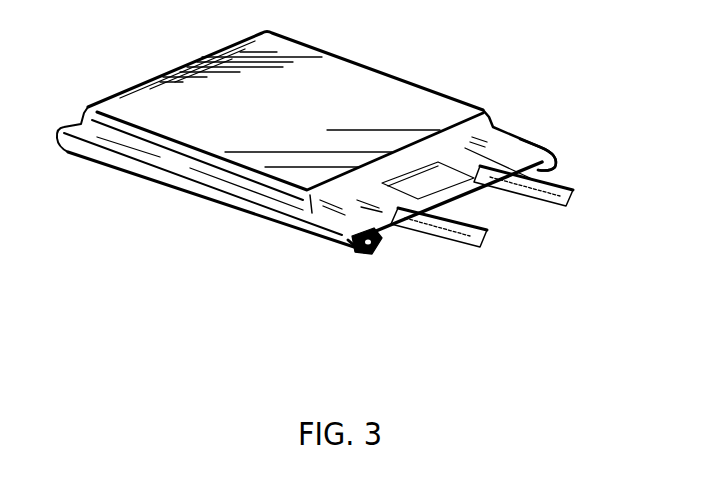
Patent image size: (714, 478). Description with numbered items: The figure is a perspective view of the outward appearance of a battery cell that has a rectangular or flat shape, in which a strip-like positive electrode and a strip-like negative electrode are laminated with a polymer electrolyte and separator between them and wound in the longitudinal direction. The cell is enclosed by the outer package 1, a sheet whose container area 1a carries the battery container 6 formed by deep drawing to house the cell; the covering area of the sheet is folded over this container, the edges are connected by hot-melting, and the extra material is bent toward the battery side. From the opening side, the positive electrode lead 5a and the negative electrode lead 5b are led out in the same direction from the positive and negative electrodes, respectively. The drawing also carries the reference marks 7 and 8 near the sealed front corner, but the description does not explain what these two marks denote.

The outer package 1 is at (511, 131).
The container area 1a is at (537, 148).
The positive electrode lead 5a is at (557, 187).
The negative electrode lead 5b is at (440, 244).
The battery container 6 is at (378, 75).
The folded portion 7 is at (358, 257).
The sealing end portion 8 is at (367, 255).